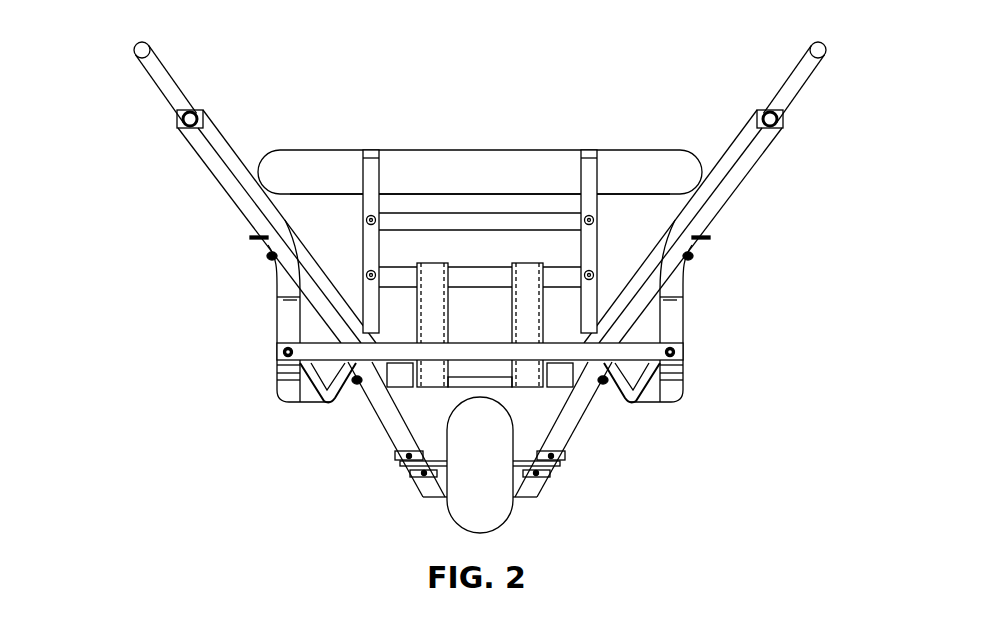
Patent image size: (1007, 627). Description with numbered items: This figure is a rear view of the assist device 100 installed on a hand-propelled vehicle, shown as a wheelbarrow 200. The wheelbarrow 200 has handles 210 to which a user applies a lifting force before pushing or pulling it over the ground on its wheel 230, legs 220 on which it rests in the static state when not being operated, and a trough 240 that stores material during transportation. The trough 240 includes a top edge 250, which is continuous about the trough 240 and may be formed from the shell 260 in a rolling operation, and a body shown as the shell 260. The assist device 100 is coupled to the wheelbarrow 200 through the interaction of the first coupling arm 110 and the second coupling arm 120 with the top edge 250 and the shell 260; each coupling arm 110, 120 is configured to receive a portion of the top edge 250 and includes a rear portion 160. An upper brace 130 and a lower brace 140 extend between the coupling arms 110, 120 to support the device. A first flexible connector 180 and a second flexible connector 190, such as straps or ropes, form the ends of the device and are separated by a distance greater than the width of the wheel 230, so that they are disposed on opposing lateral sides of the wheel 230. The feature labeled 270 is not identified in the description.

The wheelbarrow 200 is at (186, 26).
The assist device 100 is at (355, 72).
The first coupling arm 110 is at (338, 204).
The second coupling arm 120 is at (610, 202).
The upper brace 130 is at (447, 220).
The lower brace 140 is at (575, 267).
The rear portion 160 is at (372, 149).
The first flexible connector 180 is at (545, 383).
The second flexible connector 190 is at (417, 277).
The handles 210 is at (192, 150).
The legs 220 is at (283, 390).
The wheel 230 is at (513, 510).
The trough 240 is at (328, 261).
The top edge 250 is at (284, 148).
The shell 260 is at (638, 248).
The top bar upper edge 270 is at (515, 149).